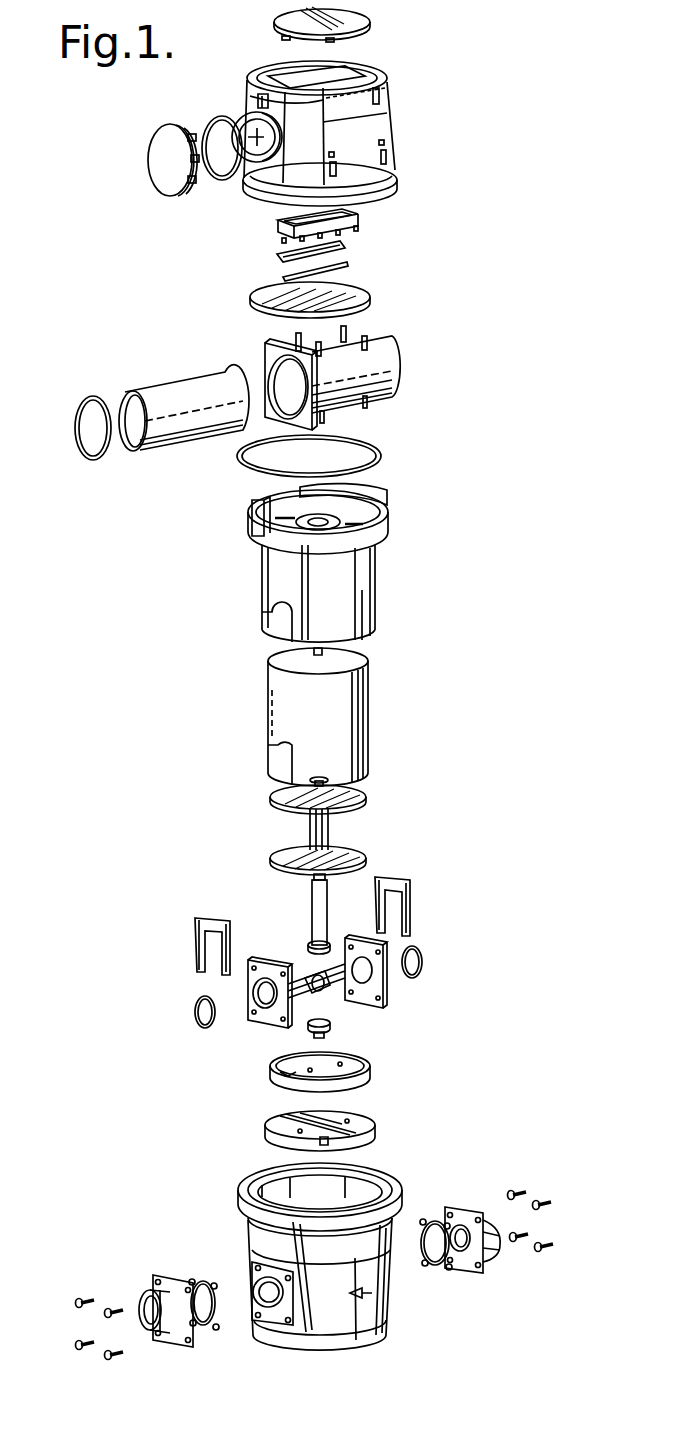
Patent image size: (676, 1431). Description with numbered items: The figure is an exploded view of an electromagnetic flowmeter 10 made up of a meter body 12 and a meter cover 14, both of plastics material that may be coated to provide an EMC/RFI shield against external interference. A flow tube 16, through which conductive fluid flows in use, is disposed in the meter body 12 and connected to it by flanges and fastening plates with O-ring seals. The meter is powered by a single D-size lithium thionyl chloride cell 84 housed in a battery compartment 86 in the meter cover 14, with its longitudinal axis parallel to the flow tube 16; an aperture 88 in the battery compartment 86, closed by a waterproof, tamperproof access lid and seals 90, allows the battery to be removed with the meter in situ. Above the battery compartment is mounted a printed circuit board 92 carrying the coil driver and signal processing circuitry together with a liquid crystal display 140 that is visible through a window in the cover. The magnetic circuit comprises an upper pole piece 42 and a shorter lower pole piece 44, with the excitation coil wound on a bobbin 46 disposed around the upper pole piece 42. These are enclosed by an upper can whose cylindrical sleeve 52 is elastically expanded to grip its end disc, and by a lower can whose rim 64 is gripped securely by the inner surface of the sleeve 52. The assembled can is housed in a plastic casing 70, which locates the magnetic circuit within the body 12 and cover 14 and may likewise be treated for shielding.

The electromagnetic flowmeter 10 is at (460, 420).
The meter body 12 is at (400, 1215).
The meter cover 14 is at (382, 131).
The flow tube 16 is at (385, 993).
The upper pole piece 42 is at (313, 912).
The lower pole piece 44 is at (332, 1023).
The bobbin 46 is at (353, 797).
The cylindrical sleeve 52 is at (343, 718).
The rim 64 is at (367, 1072).
The plastic casing 70 is at (355, 573).
The lithium thionyl chloride cell 84 is at (187, 397).
The battery compartment 86 is at (380, 363).
The aperture 88 is at (260, 128).
The seals 90 is at (220, 180).
The printed circuit board 92 is at (360, 292).
The liquid crystal display 140 is at (343, 242).